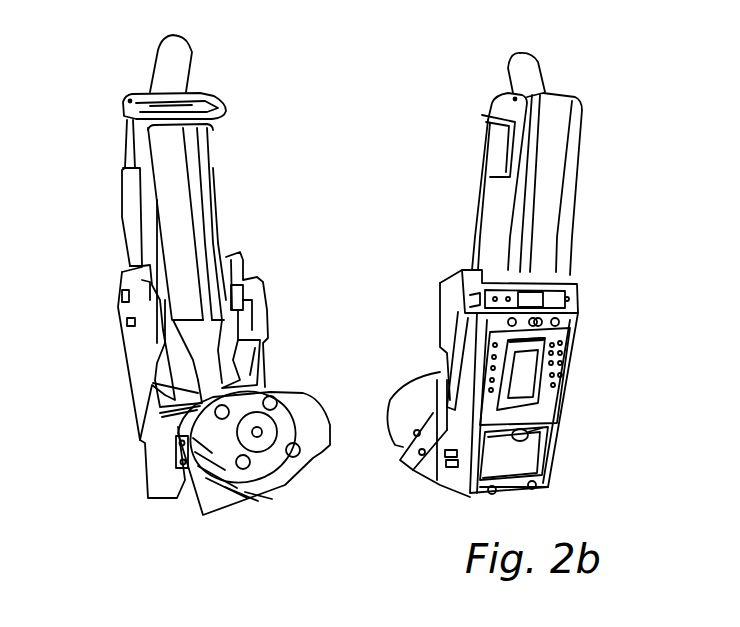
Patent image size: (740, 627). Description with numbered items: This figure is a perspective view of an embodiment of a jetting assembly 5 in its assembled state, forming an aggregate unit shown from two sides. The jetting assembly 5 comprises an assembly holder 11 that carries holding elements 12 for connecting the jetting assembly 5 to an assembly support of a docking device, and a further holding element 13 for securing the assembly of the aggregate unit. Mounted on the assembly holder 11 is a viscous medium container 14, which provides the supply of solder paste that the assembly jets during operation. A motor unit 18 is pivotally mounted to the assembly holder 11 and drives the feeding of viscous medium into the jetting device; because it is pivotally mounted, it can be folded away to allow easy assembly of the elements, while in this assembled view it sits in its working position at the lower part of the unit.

The jetting assembly 5 is at (272, 177).
The assembly holder 11 is at (138, 345).
The holding elements 12 is at (556, 423).
The holding element 13 is at (573, 96).
The viscous medium container 14 is at (183, 230).
The motor 18 is at (267, 463).